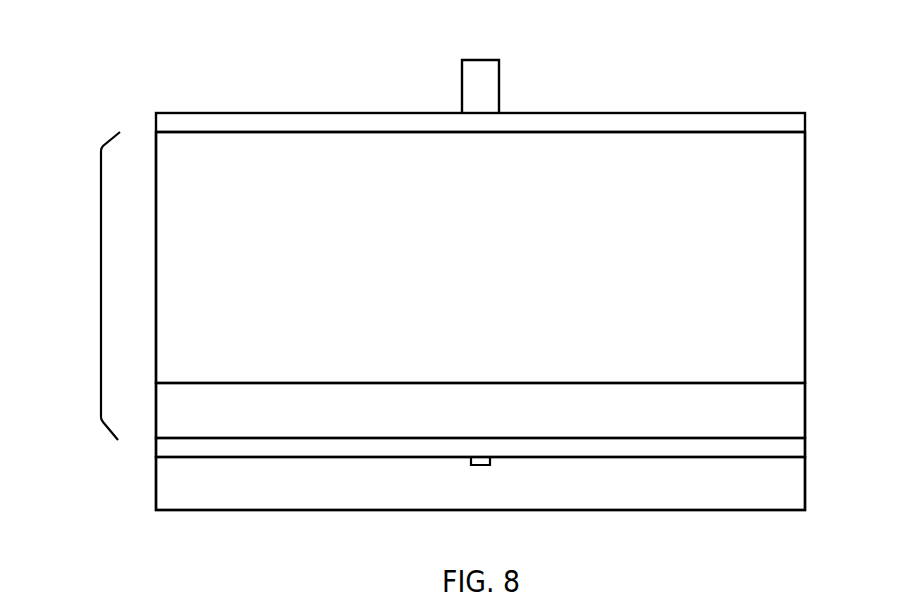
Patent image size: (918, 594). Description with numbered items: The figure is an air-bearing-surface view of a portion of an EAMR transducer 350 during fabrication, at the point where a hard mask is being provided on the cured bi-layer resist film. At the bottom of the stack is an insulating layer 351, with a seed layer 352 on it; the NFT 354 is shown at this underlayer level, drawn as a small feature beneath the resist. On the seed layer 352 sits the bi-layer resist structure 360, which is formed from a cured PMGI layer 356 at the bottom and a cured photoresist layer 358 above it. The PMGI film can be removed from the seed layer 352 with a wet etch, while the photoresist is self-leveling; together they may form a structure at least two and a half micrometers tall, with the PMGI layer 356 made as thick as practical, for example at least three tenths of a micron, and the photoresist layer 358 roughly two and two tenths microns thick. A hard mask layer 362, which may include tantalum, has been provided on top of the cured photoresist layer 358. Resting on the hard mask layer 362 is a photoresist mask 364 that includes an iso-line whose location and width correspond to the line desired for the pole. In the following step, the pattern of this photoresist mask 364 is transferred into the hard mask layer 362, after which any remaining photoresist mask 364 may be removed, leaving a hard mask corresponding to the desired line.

The EAMR transducer 350 is at (502, 36).
The insulating layer 351 is at (337, 513).
The seed layer 352 is at (153, 447).
The NFT 354 is at (488, 465).
The PMGI layer 356 is at (805, 420).
The photoresist layer 358 is at (805, 330).
The bi-layer resist structure 360 is at (101, 286).
The hard mask layer 362 is at (696, 113).
The photoresist mask 364 is at (462, 95).